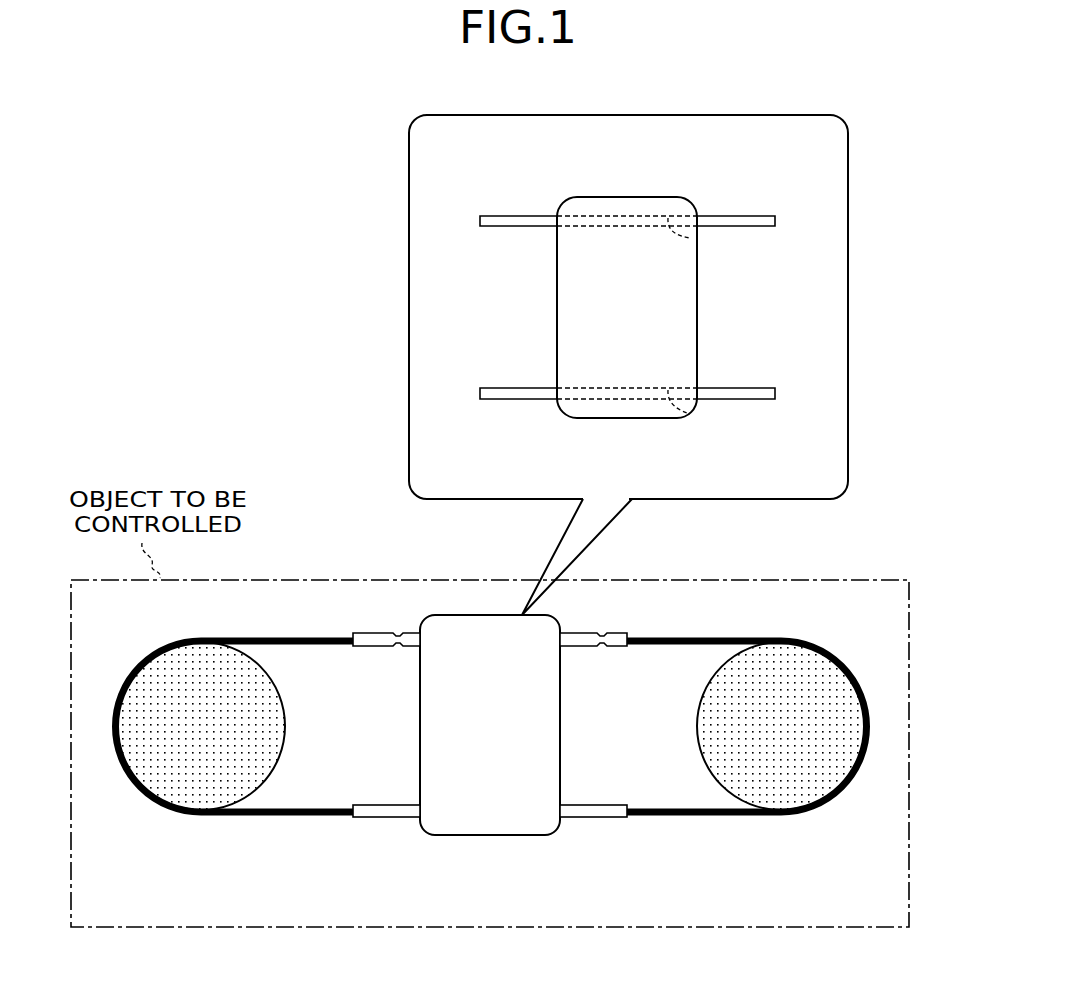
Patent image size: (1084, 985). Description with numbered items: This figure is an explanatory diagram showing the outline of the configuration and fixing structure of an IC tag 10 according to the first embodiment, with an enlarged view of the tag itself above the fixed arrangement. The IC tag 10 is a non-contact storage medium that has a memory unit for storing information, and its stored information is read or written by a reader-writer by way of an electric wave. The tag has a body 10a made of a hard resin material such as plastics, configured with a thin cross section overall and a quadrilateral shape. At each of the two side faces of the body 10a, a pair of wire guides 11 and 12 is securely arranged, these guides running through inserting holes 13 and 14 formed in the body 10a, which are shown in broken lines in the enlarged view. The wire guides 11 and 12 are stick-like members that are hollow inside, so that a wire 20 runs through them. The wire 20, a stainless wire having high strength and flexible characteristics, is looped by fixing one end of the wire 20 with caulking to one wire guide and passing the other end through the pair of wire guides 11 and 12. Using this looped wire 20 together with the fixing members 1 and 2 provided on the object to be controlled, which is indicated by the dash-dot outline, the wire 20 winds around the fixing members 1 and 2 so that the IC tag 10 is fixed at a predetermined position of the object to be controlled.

The fixing member 1 is at (797, 775).
The fixing member 2 is at (166, 772).
The IC tag 10 is at (512, 540).
The body 10a is at (510, 822).
The wire guide 11 is at (757, 216).
The wire guide 12 is at (518, 399).
The inserting hole 13 is at (668, 220).
The inserting hole 14 is at (668, 397).
The wire 20 is at (740, 637).